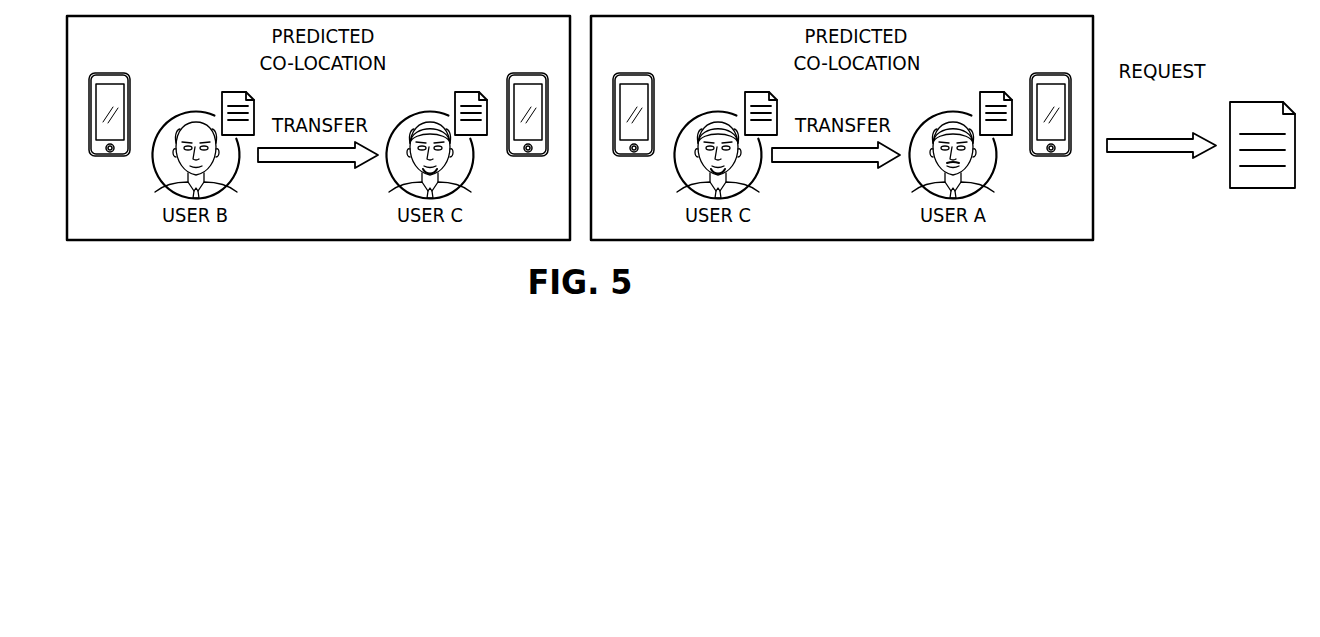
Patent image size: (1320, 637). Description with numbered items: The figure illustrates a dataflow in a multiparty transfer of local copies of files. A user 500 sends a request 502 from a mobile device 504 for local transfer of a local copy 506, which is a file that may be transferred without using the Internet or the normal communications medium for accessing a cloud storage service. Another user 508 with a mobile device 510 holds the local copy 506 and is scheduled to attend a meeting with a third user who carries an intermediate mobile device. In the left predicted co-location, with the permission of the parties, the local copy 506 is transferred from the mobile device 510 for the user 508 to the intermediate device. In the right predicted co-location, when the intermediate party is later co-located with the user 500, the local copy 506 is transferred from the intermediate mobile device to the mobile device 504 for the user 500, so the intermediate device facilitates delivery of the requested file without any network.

The user 500 is at (953, 110).
The request 502 is at (1152, 137).
The mobile device 504 is at (1050, 158).
The local copy 506 is at (1256, 101).
The user 508 is at (197, 110).
The mobile device 510 is at (110, 158).